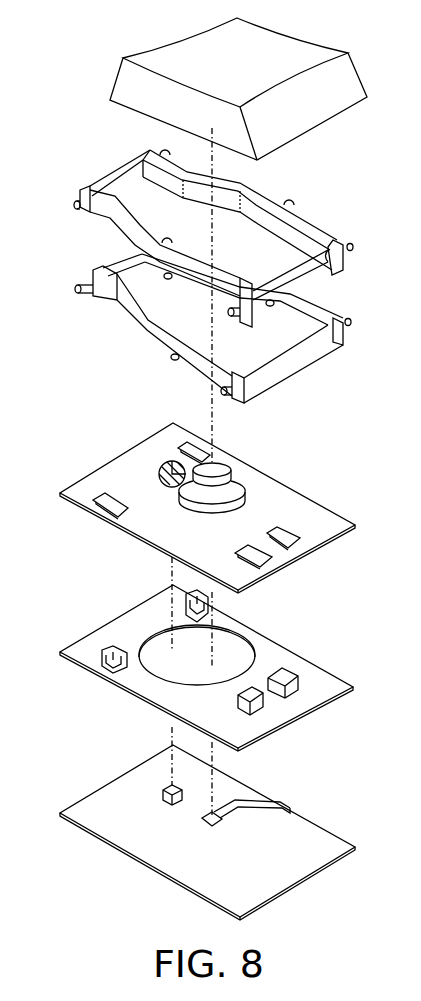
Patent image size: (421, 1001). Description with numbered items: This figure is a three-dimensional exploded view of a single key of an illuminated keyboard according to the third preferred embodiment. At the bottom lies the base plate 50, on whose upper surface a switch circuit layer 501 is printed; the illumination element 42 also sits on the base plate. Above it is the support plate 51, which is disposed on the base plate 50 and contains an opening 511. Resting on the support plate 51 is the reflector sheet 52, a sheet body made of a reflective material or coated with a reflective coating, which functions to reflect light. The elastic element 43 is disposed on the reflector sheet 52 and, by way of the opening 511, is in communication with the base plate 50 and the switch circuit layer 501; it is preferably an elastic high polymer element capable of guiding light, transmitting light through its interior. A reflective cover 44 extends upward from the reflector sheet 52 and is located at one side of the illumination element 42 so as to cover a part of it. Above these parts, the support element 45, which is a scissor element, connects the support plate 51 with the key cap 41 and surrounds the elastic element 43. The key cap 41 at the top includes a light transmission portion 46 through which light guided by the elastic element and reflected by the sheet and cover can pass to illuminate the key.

The key cap 41 is at (216, 82).
The light transmission portion 46 is at (277, 50).
The support element 45 is at (70, 150).
The reflective cover 44 is at (167, 463).
The elastic element 43 is at (233, 487).
The reflector sheet 52 is at (307, 517).
The opening 511 is at (235, 648).
The support plate 51 is at (218, 668).
The illumination element 42 is at (168, 787).
The switch circuit layer 501 is at (257, 802).
The base plate 50 is at (217, 832).